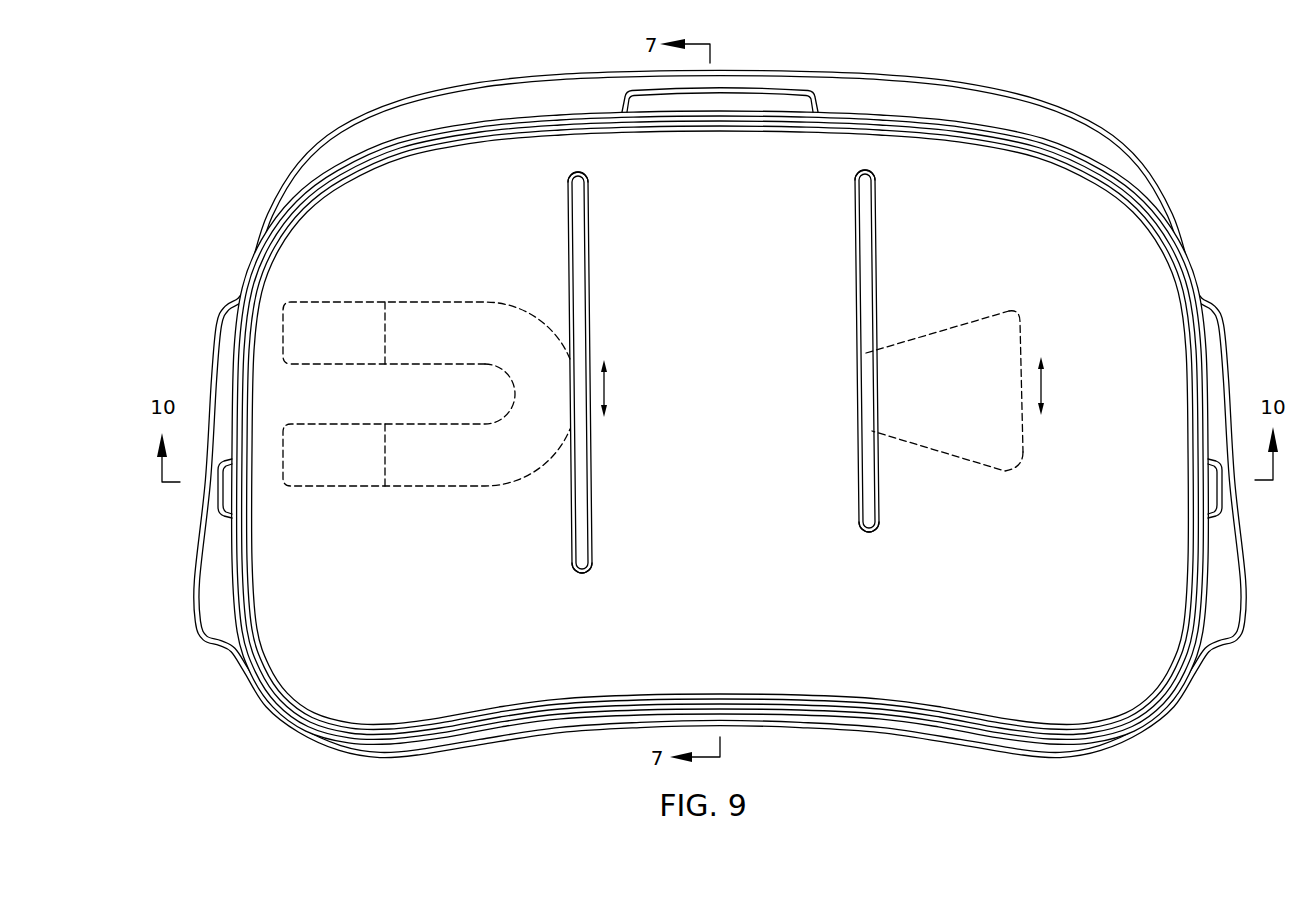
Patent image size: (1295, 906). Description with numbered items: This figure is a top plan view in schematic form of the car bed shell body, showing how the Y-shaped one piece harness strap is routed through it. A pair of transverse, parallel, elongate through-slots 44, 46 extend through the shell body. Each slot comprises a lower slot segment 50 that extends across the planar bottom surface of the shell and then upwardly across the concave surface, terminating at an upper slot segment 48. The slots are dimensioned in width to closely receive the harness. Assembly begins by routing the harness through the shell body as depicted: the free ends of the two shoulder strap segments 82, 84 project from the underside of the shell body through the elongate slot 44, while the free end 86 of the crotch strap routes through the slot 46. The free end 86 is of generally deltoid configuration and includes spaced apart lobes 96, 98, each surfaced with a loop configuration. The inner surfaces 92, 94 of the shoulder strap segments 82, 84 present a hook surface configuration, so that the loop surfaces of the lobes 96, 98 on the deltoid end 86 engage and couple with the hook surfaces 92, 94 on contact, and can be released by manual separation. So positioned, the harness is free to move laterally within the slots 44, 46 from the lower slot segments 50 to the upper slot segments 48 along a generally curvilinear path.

The through-slot 44 is at (605, 250).
The through-slot 46 is at (855, 222).
The upper slot segment 48 is at (581, 171).
The lower slot segment 50 is at (583, 573).
The shoulder strap segment 82 is at (468, 318).
The shoulder strap segment 84 is at (433, 463).
The free end 86 is at (953, 350).
The inner surface 92 is at (334, 320).
The inner surface 94 is at (327, 470).
The lobe 96 is at (1013, 310).
The lobe 98 is at (1003, 470).